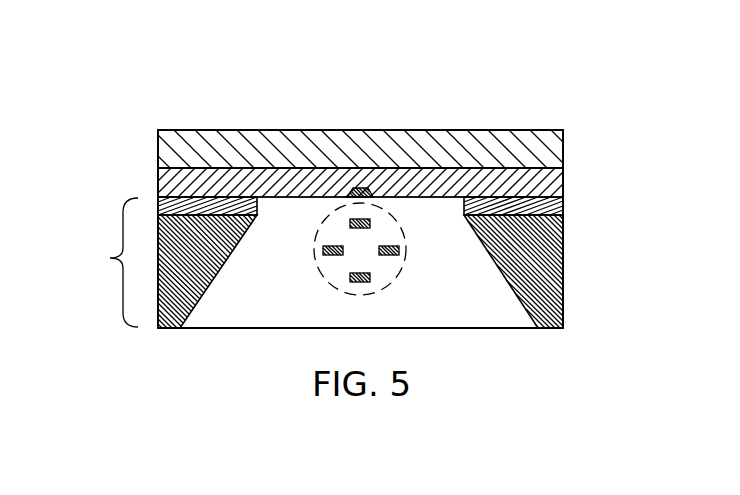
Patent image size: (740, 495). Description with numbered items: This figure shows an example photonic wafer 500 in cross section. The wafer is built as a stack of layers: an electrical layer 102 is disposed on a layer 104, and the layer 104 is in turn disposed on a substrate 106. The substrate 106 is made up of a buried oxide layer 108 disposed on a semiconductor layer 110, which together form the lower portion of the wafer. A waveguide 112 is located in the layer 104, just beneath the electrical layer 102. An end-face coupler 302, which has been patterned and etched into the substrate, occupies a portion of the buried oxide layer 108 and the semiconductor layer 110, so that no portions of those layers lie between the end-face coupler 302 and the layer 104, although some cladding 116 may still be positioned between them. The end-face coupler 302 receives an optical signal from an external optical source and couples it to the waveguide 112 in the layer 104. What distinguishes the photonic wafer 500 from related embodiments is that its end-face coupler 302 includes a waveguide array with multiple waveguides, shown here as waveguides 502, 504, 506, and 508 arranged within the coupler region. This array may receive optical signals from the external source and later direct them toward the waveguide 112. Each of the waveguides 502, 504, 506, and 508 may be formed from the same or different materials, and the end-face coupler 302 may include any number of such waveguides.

The photonic wafer 500 is at (385, 74).
The electrical layer 102 is at (565, 149).
The layer 104 is at (565, 183).
The substrate 106 is at (99, 262).
The buried oxide layer 108 is at (565, 208).
The semiconductor layer 110 is at (565, 273).
The waveguide 112 is at (361, 197).
The cladding 116 is at (478, 318).
The end-face coupler 302 is at (393, 280).
The waveguide 502 is at (350, 222).
The waveguide 504 is at (323, 251).
The waveguide 506 is at (403, 249).
The waveguide 508 is at (350, 279).